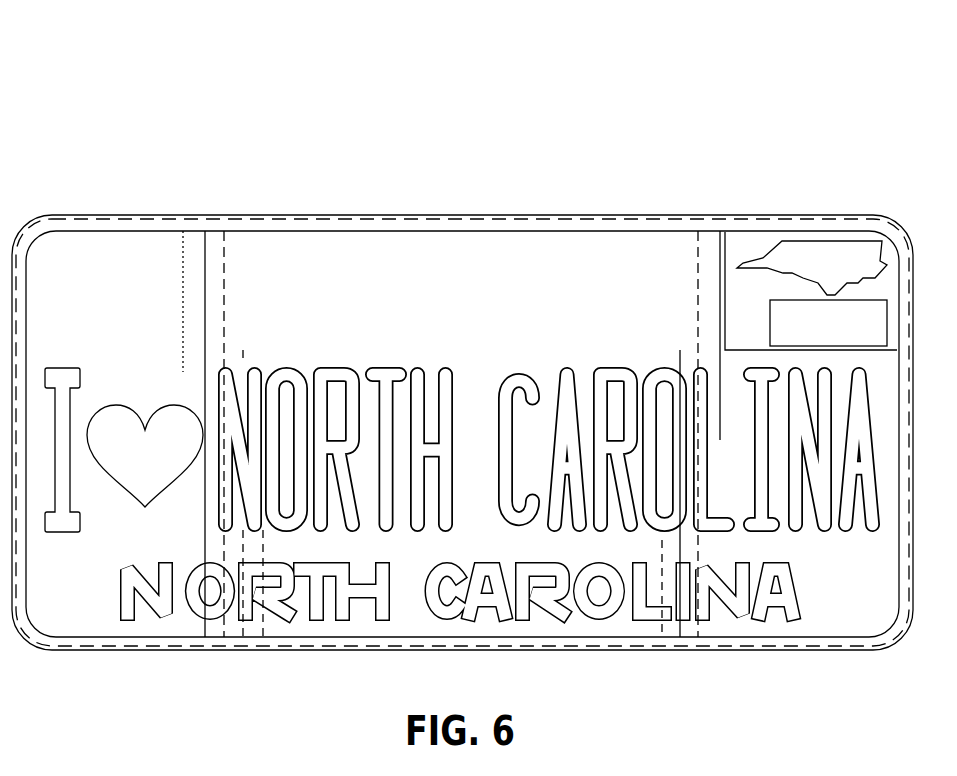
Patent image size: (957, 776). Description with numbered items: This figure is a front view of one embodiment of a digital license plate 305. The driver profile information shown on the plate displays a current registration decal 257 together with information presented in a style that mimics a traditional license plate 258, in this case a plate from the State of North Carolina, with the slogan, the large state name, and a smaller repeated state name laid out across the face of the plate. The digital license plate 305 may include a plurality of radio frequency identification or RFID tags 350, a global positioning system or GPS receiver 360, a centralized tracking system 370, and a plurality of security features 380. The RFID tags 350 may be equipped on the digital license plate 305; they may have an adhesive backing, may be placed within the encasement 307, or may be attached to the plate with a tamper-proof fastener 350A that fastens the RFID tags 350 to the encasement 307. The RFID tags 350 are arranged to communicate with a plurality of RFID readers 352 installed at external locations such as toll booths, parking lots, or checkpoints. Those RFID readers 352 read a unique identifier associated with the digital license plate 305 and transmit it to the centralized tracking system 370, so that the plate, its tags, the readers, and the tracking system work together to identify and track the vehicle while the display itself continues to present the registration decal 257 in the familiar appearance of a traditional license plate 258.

The digital license plate 305 is at (130, 94).
The encasement 307 is at (190, 195).
The current registration decal 257 is at (760, 218).
The traditional license plate 258 is at (843, 620).
The RFID tags 350 is at (126, 303).
The tamper-proof fastener 350A is at (134, 464).
The RFID readers 352 is at (838, 167).
The GPS receiver 360 is at (124, 605).
The centralized tracking system 370 is at (714, 127).
The security features 380 is at (776, 127).